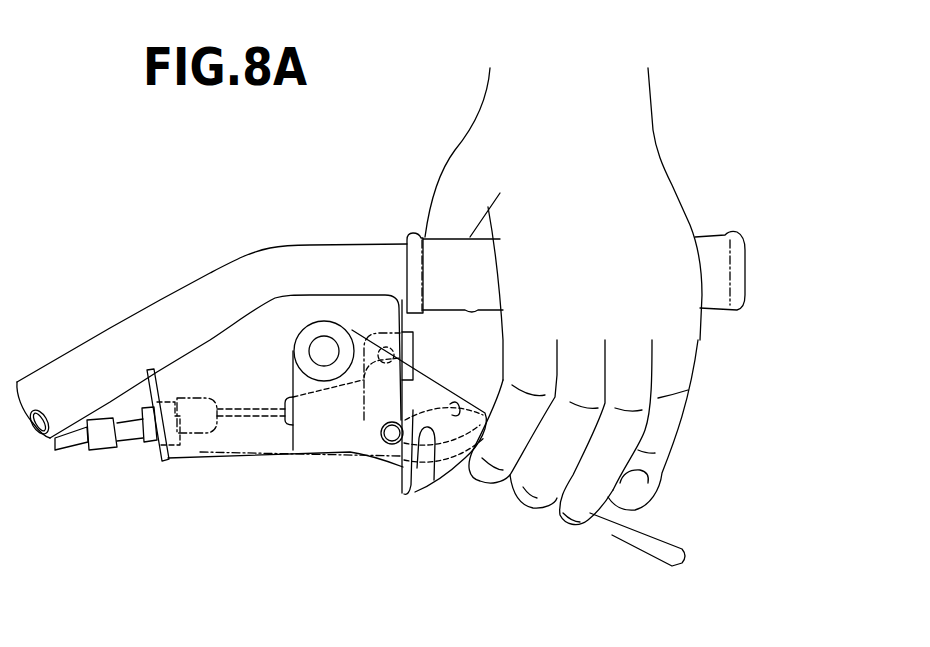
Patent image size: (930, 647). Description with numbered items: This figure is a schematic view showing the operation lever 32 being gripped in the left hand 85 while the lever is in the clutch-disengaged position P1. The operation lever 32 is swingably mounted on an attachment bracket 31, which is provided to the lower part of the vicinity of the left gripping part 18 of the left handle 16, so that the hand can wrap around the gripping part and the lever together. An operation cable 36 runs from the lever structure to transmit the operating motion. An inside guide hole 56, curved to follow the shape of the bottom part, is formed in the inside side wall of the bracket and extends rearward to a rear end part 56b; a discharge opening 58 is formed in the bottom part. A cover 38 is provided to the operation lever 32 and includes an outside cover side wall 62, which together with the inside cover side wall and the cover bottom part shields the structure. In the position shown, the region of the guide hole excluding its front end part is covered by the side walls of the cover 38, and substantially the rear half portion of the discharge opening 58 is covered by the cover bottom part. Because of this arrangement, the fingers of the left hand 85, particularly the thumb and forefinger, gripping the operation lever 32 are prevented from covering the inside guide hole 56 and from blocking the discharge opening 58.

The left handle 16 is at (237, 272).
The left gripping part 18 is at (445, 253).
The attachment bracket 31 is at (203, 450).
The operation lever 32 is at (617, 530).
The operation cable 36 is at (237, 413).
The cover 38 is at (450, 474).
The inside guide hole 56 is at (413, 487).
The rear end part 56b is at (456, 410).
The discharge opening 58 is at (330, 345).
The outside cover side wall 62 is at (426, 399).
The left hand 85 is at (627, 163).
The clutch-disengaged position P1 is at (695, 560).